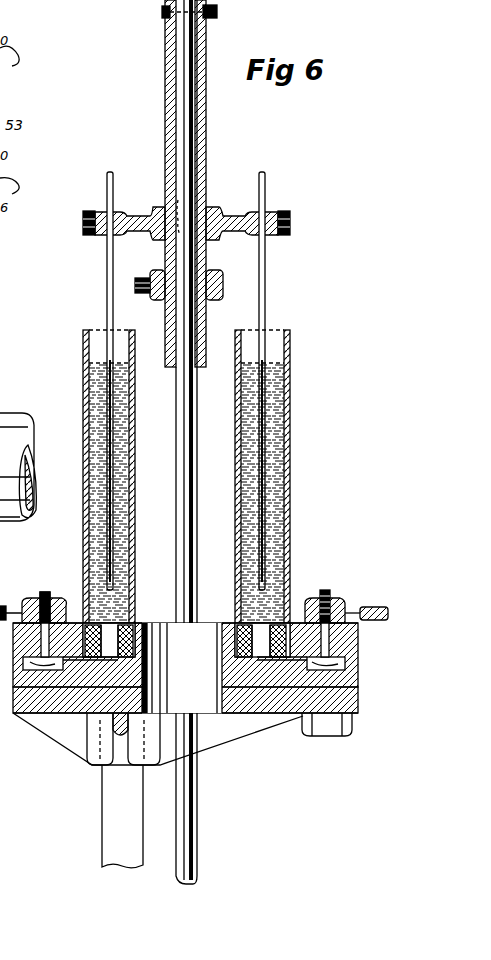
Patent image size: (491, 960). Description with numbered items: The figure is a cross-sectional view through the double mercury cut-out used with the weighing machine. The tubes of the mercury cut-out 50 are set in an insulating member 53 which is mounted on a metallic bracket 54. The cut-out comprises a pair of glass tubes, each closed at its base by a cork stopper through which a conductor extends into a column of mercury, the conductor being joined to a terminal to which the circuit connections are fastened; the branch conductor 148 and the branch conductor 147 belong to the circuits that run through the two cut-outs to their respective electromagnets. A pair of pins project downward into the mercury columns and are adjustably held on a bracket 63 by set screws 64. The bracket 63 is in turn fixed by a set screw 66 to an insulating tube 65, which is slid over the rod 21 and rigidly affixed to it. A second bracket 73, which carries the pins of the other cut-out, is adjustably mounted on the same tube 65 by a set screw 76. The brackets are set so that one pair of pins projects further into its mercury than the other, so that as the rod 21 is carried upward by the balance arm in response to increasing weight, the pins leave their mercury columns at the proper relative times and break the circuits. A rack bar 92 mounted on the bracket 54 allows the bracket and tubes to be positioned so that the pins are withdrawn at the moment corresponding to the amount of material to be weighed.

The rod 21 is at (176, 440).
The mercury cut-out 50 is at (160, 484).
The insulating member 53 is at (358, 638).
The metallic bracket 54 is at (358, 701).
The bracket 63 is at (208, 212).
The set screw 64 is at (83, 222).
The insulating tube 65 is at (207, 140).
The set screw 66 is at (172, 192).
The bracket 73 is at (223, 286).
The set screw 76 is at (135, 286).
The rack bar 92 is at (115, 812).
The branch conductor 147 is at (18, 188).
The branch conductor 148 is at (18, 60).